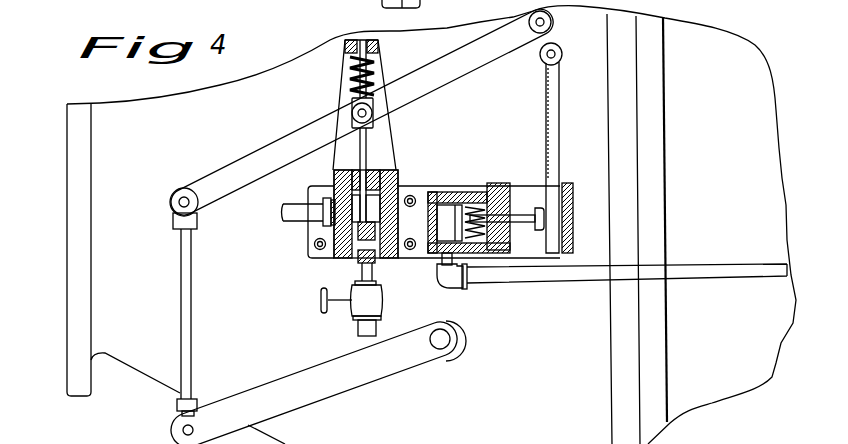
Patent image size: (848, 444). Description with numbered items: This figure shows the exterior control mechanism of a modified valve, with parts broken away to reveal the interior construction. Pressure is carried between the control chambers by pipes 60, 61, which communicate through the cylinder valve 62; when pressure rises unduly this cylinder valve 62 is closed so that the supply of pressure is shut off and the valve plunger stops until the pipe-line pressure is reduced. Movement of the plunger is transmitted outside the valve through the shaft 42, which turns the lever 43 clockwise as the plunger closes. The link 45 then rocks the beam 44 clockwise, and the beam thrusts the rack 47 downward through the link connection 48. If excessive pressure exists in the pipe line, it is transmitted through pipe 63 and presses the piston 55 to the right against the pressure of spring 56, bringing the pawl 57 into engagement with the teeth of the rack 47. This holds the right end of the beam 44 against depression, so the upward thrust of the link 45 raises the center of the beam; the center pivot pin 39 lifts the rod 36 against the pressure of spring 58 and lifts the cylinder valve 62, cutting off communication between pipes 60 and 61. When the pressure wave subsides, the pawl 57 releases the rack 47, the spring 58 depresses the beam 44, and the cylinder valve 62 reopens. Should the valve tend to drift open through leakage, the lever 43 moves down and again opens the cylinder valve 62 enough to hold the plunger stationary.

The rod 36 is at (370, 162).
The pin 39 is at (376, 118).
The shaft 42 is at (442, 356).
The lever 43 is at (336, 396).
The beam 44 is at (288, 146).
The link 45 is at (193, 334).
The rack 47 is at (560, 140).
The link connection 48 is at (552, 30).
The piston 55 is at (458, 204).
The spring 56 is at (490, 198).
The pawl 57 is at (537, 212).
The spring 58 is at (345, 70).
The pipe 60 is at (300, 230).
The pipe 61 is at (356, 328).
The cylinder valve 62 is at (383, 260).
The pipe 63 is at (622, 270).